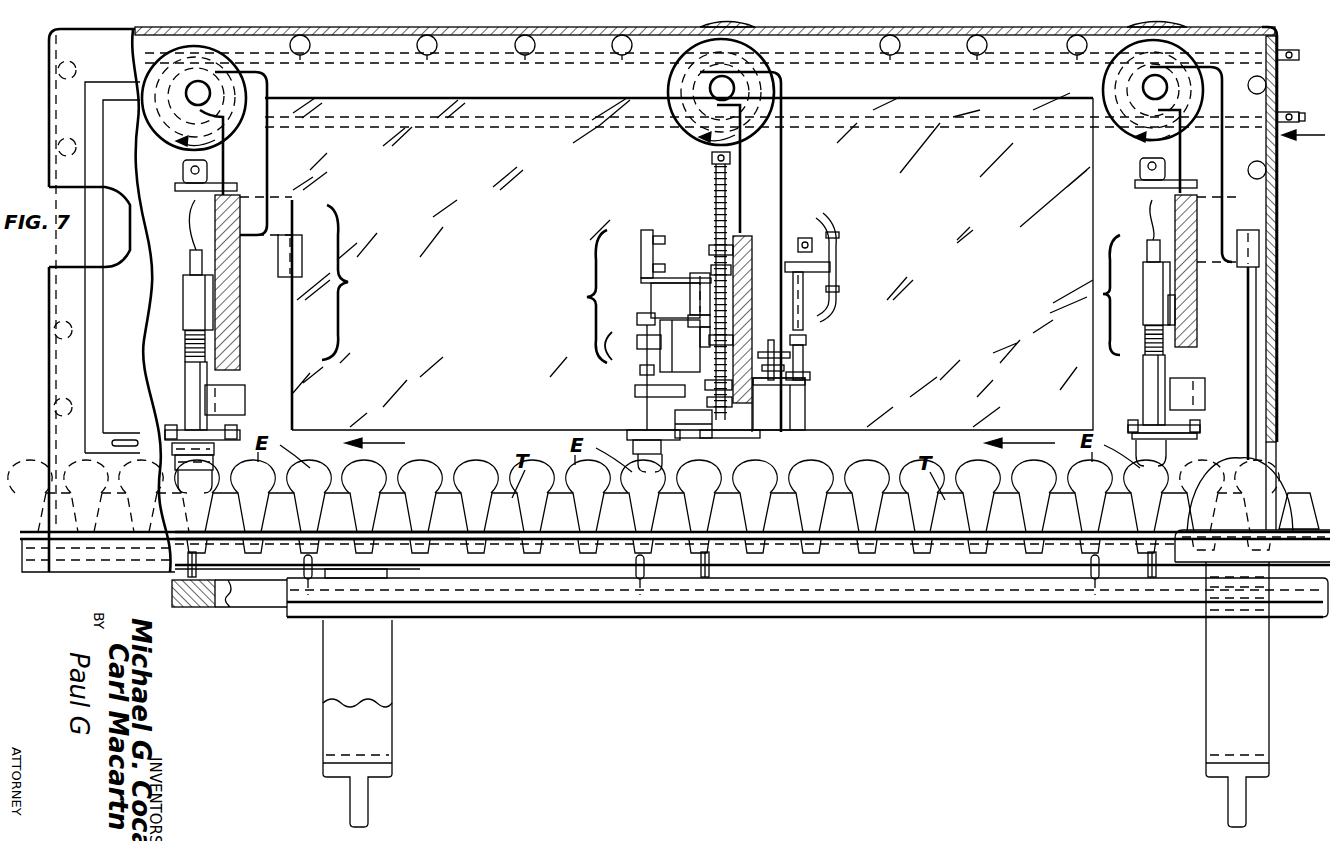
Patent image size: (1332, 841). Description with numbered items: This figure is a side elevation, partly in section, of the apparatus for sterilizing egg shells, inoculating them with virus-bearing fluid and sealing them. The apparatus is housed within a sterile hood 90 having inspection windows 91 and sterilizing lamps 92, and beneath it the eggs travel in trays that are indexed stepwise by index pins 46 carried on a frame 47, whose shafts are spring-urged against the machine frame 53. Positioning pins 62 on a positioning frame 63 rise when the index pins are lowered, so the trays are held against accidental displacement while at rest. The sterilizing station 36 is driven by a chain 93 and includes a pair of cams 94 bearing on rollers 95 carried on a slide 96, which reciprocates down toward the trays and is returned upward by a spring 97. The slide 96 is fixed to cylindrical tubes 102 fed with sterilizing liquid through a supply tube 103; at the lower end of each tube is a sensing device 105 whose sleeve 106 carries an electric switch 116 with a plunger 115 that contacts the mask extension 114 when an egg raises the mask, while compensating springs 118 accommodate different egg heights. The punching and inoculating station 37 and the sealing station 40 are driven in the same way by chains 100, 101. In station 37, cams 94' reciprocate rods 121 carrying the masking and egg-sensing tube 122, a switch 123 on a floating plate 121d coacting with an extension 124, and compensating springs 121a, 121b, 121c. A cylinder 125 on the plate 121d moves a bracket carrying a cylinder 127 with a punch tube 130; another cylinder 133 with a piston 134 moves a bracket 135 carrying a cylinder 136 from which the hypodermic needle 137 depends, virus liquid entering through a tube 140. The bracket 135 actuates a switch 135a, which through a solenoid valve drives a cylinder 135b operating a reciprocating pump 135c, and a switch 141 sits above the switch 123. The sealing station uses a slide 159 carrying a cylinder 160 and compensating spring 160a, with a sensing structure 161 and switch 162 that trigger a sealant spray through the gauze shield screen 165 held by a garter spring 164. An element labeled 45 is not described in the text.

The sterilizing station 36 is at (1100, 283).
The punching and inoculating station 37 is at (576, 296).
The sealing station 40 is at (355, 282).
The conveyor frame ledge 45 is at (60, 560).
The index pins 46 is at (186, 570).
The frame 47 is at (250, 608).
The machine frame 53 is at (375, 733).
The positioning pins 62 is at (303, 575).
The positioning frame 63 is at (540, 625).
The sterile hood 90 is at (62, 103).
The inspection windows 91 is at (160, 358).
The sterilizing lamps 92 is at (310, 52).
The chain 93 is at (1297, 60).
The cams 94 is at (1142, 151).
The cams 94' is at (693, 235).
The rollers 95 is at (1140, 150).
The slide 96 is at (1160, 210).
The spring 97 is at (1219, 293).
The chain 100 is at (940, 122).
The chain 101 is at (425, 122).
The cylindrical tube 102 is at (1143, 350).
The supply tube 103 is at (1140, 222).
The sensing device 105 is at (1112, 424).
The sleeve 106 is at (1150, 378).
The extension 114 is at (1190, 432).
The plunger 115 is at (1195, 410).
The electric switch 116 is at (1185, 385).
The compensating springs 118 is at (1165, 318).
The rods 121 is at (715, 203).
The spring 121a is at (712, 163).
The spring 121b is at (708, 265).
The spring 121c is at (787, 357).
The plate 121d is at (776, 262).
The masking and egg-sensing tube 122 is at (652, 470).
The switch 123 is at (740, 437).
The extension 124 is at (678, 440).
The cylinder 125 is at (700, 320).
The cylinder 127 is at (675, 410).
The punch tube 130 is at (640, 428).
The cylinder 133 is at (641, 254).
The piston 134 is at (651, 295).
The bracket 135 is at (682, 293).
The switch 135a is at (790, 338).
The cylinder 135b is at (820, 380).
The reciprocating pump 135c is at (838, 262).
The cylinder 136 is at (640, 321).
The hypodermic needle 137 is at (640, 385).
The tube 140 is at (640, 372).
The switch 141 is at (800, 395).
The slide 159 is at (206, 212).
The cylinder 160 is at (200, 340).
The compensating spring 160a is at (215, 325).
The sensing structure 161 is at (160, 450).
The switch 162 is at (235, 400).
The garter spring 164 is at (205, 452).
The gauze shield screen 165 is at (196, 492).